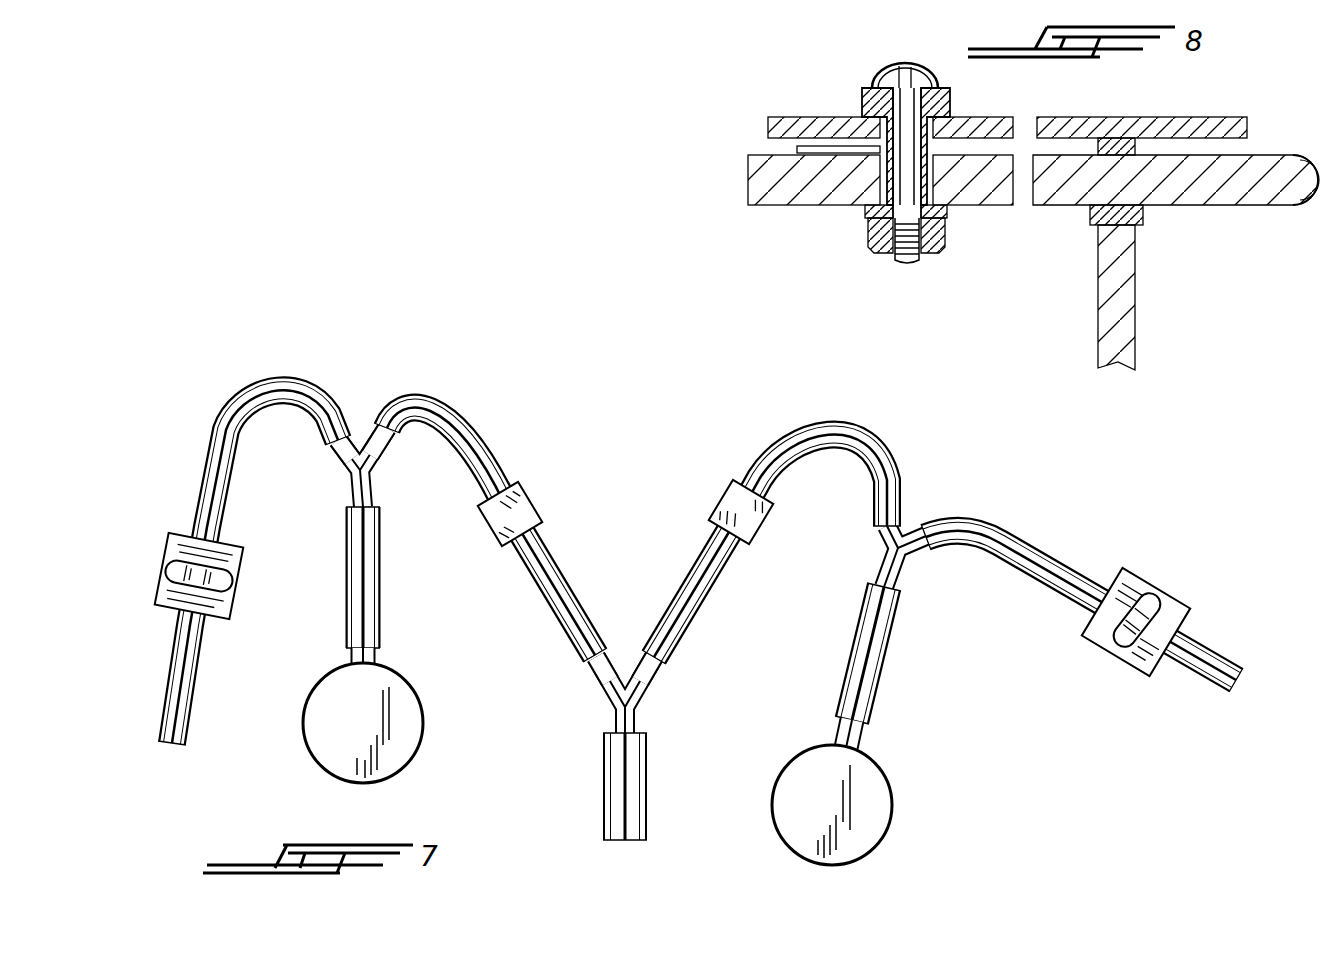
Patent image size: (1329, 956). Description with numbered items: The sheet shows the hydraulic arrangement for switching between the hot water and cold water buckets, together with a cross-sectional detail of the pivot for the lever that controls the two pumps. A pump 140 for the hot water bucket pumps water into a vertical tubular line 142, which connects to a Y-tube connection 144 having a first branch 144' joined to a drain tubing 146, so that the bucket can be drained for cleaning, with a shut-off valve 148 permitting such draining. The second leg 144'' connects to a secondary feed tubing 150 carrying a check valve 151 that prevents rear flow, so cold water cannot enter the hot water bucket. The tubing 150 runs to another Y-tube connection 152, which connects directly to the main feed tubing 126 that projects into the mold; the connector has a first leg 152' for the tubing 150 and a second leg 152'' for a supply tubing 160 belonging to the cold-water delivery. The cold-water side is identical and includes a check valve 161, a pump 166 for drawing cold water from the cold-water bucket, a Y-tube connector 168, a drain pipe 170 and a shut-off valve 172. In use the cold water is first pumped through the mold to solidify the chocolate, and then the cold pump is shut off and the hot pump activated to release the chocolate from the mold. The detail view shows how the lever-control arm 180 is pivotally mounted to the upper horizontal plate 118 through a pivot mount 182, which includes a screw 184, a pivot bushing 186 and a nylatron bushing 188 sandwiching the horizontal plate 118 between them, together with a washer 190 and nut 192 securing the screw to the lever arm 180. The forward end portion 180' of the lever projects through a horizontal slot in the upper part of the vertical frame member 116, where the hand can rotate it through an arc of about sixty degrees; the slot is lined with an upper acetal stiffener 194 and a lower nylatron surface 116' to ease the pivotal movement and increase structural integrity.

In FIG. 8, the vertical frame member 116 is at (1143, 297).
In FIG. 8, the lower nylatron surface 116' is at (1142, 230).
In FIG. 8, the horizontal frame member 118 is at (1202, 117).
In FIG. 7, the water-feed tube 126 is at (617, 797).
In FIG. 7, the pump 140 is at (405, 743).
In FIG. 7, the vertical tubular line 142 is at (380, 593).
In FIG. 7, the Y-tube connection 144 is at (334, 471).
In FIG. 7, the first branch 144' is at (317, 457).
In FIG. 7, the second leg 144'' is at (410, 456).
In FIG. 7, the drain tubing 146 is at (220, 436).
In FIG. 7, the shut-off valve 148 is at (225, 578).
In FIG. 7, the secondary feed tubing 150 is at (438, 396).
In FIG. 7, the check valve 151 is at (532, 494).
In FIG. 7, the Y-tube connection 152 is at (625, 665).
In FIG. 7, the first leg 152' is at (573, 684).
In FIG. 7, the second leg 152'' is at (680, 686).
In FIG. 7, the supply tubing 160 is at (735, 560).
In FIG. 7, the check valve 161 is at (727, 490).
In FIG. 7, the pump 166 is at (884, 778).
In FIG. 7, the Y-tube connector 168 is at (905, 528).
In FIG. 7, the drain pipe 170 is at (1023, 538).
In FIG. 7, the shut-off valve 172 is at (1140, 580).
In FIG. 8, the lever-control arm 180 is at (1175, 156).
In FIG. 8, the forward end portion 180' is at (1277, 203).
In FIG. 8, the pivot mount 182 is at (873, 78).
In FIG. 8, the screw 184 is at (925, 50).
In FIG. 8, the pivot bushing 186 is at (972, 98).
In FIG. 8, the nylatron bushing 188 is at (800, 150).
In FIG. 8, the washer 190 is at (866, 213).
In FIG. 8, the nut 192 is at (867, 228).
In FIG. 8, the upper acetal stiffener 194 is at (1137, 152).